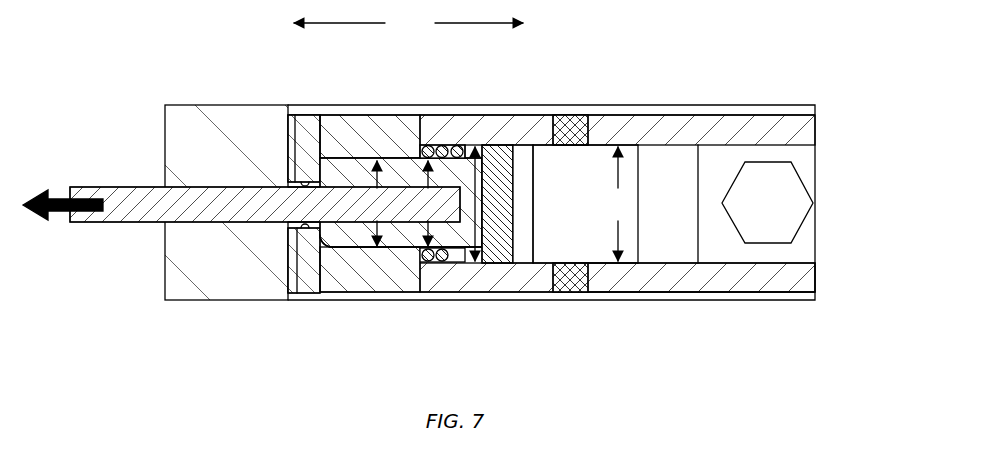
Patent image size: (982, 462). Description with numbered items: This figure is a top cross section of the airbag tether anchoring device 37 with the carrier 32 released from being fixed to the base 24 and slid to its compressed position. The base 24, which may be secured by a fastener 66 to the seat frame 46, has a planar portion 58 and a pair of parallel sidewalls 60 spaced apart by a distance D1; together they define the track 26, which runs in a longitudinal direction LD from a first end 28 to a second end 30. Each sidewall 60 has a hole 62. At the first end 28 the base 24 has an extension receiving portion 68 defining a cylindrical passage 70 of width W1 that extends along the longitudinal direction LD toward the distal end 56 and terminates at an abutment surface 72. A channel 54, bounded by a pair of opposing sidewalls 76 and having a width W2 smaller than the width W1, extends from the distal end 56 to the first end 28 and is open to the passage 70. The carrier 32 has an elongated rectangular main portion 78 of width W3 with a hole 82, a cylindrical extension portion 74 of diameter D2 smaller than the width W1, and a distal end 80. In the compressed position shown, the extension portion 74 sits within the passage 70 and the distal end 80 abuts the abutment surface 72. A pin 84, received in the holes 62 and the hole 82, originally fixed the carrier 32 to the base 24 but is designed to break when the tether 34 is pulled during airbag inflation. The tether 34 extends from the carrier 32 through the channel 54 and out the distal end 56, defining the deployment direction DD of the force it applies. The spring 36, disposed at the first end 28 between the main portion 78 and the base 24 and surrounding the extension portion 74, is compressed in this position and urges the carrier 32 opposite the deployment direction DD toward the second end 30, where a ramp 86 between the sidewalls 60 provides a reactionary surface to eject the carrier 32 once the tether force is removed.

The airbag tether anchoring device 37 is at (710, 36).
The frame 46 is at (213, 275).
The distal end 56 is at (287, 140).
The abutment surface 72 is at (312, 232).
The opposing sidewalls 76 is at (293, 115).
The channel 54 is at (312, 178).
The extension receiving portion 68 is at (387, 140).
The extension portion 74 is at (333, 170).
The passage 70 is at (397, 250).
The distal end 80 is at (325, 249).
The tether 34 is at (143, 198).
The deployment direction DD is at (87, 218).
The width W2 is at (310, 205).
The pin 84 is at (502, 153).
The spring 36 is at (427, 263).
The first end 28 is at (446, 265).
The width W1 is at (377, 203).
The diameter D2 is at (428, 203).
The width W3 is at (472, 181).
The carrier 32 is at (478, 157).
The hole 82 is at (515, 176).
The sidewalls 60 is at (517, 130).
The base 24 is at (498, 272).
The second end 30 is at (688, 270).
The hole 62 is at (552, 128).
The main portion 78 is at (531, 265).
The track 26 is at (553, 233).
The planar portion 58 is at (568, 192).
The distance D1 is at (618, 204).
The ramp 86 is at (663, 167).
The fastener 66 is at (787, 198).
The longitudinal direction LD is at (408, 23).